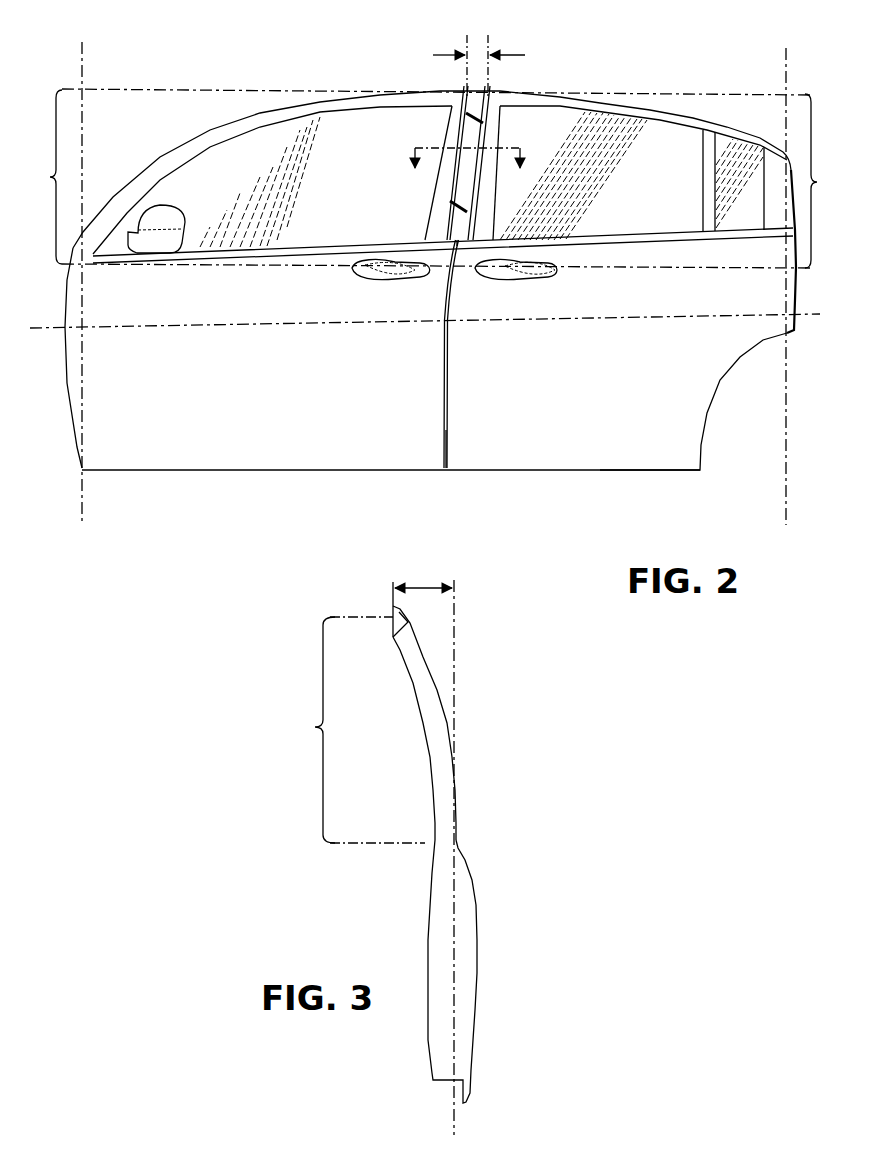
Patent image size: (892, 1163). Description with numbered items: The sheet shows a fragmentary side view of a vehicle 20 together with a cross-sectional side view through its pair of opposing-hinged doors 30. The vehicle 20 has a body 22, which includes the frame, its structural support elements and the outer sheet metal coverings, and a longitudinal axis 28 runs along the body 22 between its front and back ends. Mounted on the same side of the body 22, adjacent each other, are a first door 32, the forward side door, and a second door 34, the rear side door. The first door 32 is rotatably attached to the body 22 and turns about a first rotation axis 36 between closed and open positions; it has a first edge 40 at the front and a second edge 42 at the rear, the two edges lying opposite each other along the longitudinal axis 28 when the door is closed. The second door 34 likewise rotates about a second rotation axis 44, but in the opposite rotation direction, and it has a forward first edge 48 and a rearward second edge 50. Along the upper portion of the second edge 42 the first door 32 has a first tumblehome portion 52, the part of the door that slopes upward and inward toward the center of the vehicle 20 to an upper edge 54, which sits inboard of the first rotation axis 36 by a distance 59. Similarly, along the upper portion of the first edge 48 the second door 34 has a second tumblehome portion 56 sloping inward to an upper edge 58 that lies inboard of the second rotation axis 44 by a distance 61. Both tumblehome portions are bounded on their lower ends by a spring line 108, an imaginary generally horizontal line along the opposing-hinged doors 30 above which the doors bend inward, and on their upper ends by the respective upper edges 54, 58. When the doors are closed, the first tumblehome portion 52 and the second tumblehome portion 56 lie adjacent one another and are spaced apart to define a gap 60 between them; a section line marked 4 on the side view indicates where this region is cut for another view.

In FIG. 2, the vehicle 20 is at (667, 63).
In FIG. 2, the body 22 is at (696, 110).
In FIG. 2, the longitudinal axis 28 is at (802, 313).
In FIG. 2, the pair of opposing-hinged doors 30 is at (528, 484).
In FIG. 2, the first door 32 is at (177, 472).
In FIG. 3, the first door 32 is at (513, 971).
In FIG. 2, the second door 34 is at (682, 473).
In FIG. 3, the second door 34 is at (477, 903).
In FIG. 2, the first rotation axis 36 is at (82, 68).
In FIG. 3, the first rotation axis 36 is at (503, 857).
In FIG. 2, the first edge 40 is at (68, 385).
In FIG. 2, the second edge 42 is at (447, 430).
In FIG. 2, the second rotation axis 44 is at (788, 78).
In FIG. 3, the second rotation axis 44 is at (458, 652).
In FIG. 2, the first edge 48 is at (445, 357).
In FIG. 2, the second edge 50 is at (795, 322).
In FIG. 2, the first tumblehome portion 52 is at (43, 177).
In FIG. 3, the first tumblehome portion 52 is at (346, 730).
In FIG. 2, the upper edge 54 is at (433, 92).
In FIG. 3, the upper edge 54 is at (377, 706).
In FIG. 2, the second tumblehome portion 56 is at (826, 181).
In FIG. 3, the second tumblehome portion 56 is at (346, 730).
In FIG. 2, the upper edge 58 is at (603, 96).
In FIG. 3, the upper edge 58 is at (393, 605).
In FIG. 3, the distance 59 is at (398, 589).
In FIG. 2, the gap 60 is at (510, 53).
In FIG. 3, the distance 61 is at (425, 585).
In FIG. 2, the spring line 108 is at (248, 262).
In FIG. 2, the section line 4- 4 is at (469, 174).